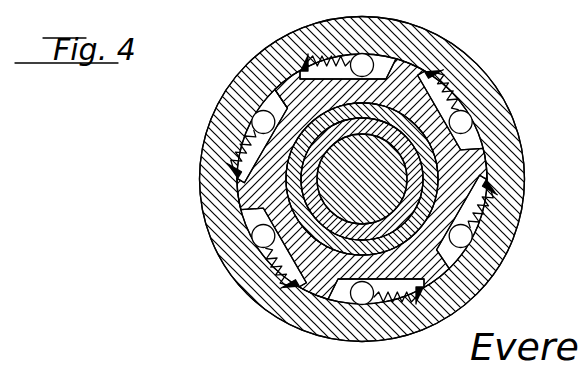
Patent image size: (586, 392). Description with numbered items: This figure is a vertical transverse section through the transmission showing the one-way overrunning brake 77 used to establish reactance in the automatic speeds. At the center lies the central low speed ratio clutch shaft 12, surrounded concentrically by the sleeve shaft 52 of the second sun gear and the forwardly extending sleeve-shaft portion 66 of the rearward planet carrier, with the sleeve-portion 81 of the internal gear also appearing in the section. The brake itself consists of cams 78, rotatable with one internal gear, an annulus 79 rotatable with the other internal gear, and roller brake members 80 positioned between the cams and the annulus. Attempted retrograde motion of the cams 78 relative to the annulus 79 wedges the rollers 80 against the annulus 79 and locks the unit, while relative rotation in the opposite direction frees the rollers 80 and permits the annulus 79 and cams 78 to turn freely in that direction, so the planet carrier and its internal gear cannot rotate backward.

The central low speed ratio clutch shaft 12 is at (380, 172).
The sleeve shaft 52 is at (228, 190).
The sleeve-shaft portion 66 is at (447, 262).
The one-way overrunning brake 77 is at (412, 66).
The cams 78 is at (276, 96).
The annulus 79 is at (256, 250).
The roller brake members 80 is at (358, 340).
The sleeve-portion 81 is at (267, 79).